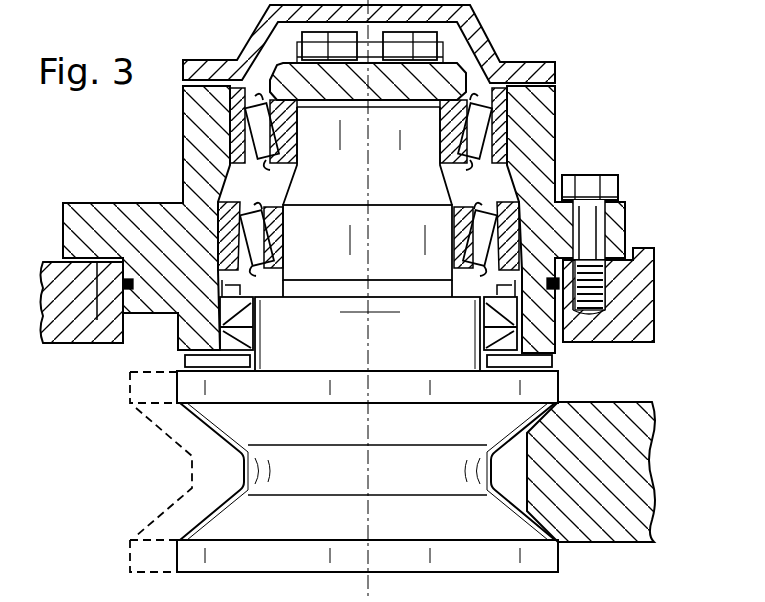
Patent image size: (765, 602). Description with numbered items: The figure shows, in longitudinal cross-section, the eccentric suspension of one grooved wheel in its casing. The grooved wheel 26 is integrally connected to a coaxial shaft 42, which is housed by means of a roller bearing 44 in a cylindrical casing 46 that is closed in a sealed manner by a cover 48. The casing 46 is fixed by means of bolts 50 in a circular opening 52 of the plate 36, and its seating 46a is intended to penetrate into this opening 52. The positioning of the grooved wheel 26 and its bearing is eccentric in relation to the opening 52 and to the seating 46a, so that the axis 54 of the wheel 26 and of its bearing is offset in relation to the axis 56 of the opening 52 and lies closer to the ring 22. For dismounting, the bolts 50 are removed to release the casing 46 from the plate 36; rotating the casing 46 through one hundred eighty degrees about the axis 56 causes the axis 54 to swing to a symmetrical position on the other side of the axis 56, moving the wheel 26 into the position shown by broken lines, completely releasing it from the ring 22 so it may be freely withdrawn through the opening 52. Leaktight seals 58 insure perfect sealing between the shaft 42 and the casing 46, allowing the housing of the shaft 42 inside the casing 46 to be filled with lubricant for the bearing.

The ring 22 is at (595, 410).
The grooved wheel 26 is at (321, 435).
The plate 36 is at (645, 258).
The shaft 42 is at (408, 237).
The roller bearing 44 is at (508, 133).
The casing 46 is at (547, 115).
The seating 46a is at (133, 203).
The cover 48 is at (488, 57).
The bolts 50 is at (600, 178).
The circular opening 52 is at (130, 343).
The axis 54 is at (370, 345).
The axis 56 is at (340, 313).
The leaktight seals 58 is at (217, 340).